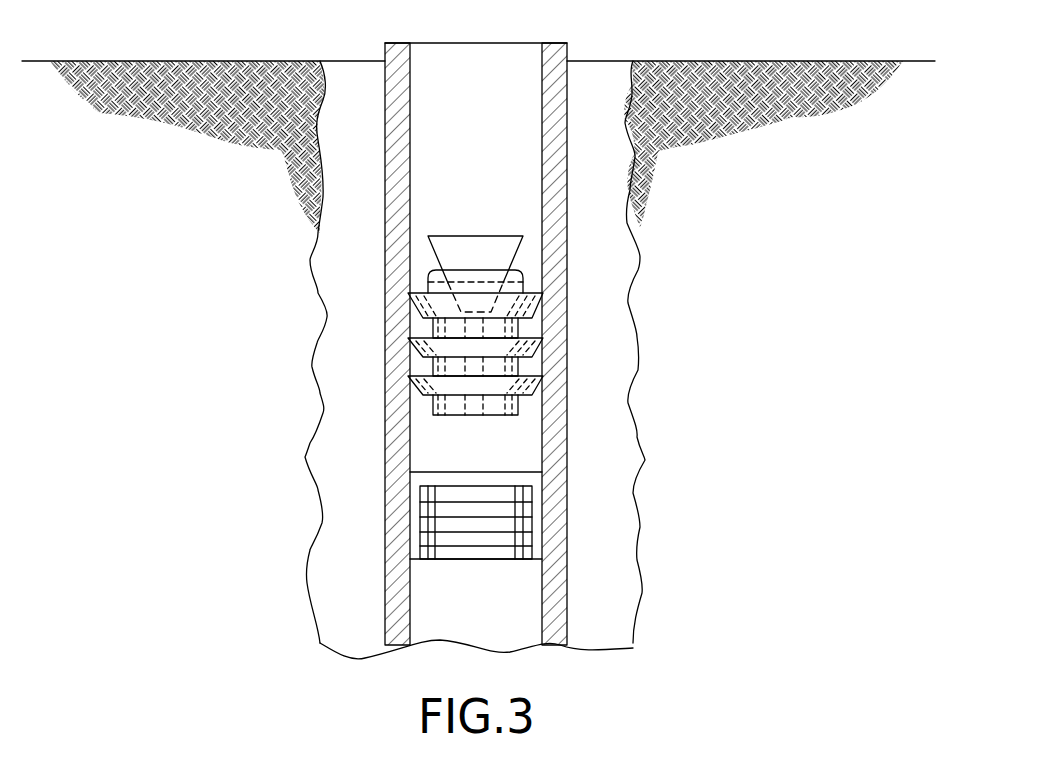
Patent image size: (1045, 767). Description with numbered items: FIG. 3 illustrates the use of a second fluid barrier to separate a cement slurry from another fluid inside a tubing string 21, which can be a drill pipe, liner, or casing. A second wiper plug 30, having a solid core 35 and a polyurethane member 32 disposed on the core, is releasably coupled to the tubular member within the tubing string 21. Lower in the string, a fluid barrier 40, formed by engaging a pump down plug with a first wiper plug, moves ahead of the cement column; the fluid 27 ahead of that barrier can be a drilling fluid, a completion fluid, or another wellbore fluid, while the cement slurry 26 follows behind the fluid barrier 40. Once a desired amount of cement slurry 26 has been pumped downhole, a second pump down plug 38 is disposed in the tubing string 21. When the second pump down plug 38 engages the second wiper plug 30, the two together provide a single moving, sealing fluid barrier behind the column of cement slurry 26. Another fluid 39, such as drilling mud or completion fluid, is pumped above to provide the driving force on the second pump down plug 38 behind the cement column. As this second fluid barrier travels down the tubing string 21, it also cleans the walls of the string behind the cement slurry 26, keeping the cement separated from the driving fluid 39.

The tubing string 21 is at (555, 164).
The cement slurry 26 is at (430, 449).
The fluid 27 is at (497, 602).
The second wiper plug 30 is at (586, 324).
The polyurethane member 32 is at (518, 303).
The solid core 35 is at (497, 405).
The second pump down plug 38 is at (500, 248).
The another fluid 39 is at (442, 149).
The fluid barrier 40 is at (477, 523).